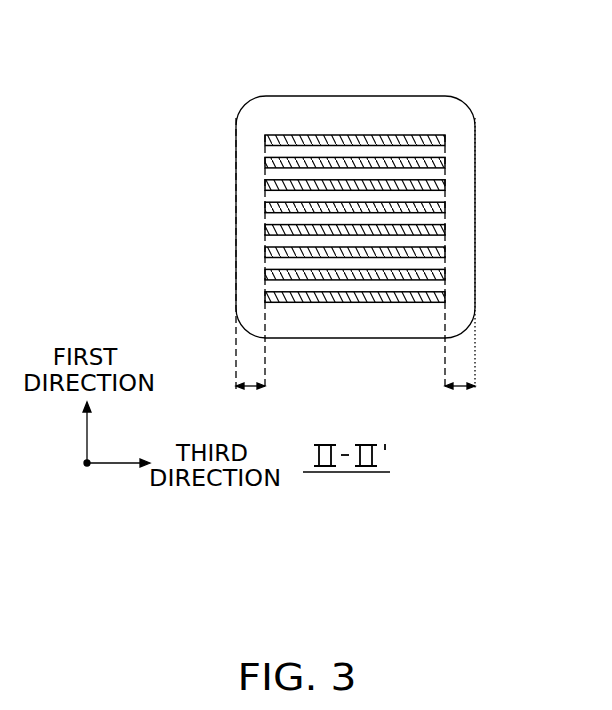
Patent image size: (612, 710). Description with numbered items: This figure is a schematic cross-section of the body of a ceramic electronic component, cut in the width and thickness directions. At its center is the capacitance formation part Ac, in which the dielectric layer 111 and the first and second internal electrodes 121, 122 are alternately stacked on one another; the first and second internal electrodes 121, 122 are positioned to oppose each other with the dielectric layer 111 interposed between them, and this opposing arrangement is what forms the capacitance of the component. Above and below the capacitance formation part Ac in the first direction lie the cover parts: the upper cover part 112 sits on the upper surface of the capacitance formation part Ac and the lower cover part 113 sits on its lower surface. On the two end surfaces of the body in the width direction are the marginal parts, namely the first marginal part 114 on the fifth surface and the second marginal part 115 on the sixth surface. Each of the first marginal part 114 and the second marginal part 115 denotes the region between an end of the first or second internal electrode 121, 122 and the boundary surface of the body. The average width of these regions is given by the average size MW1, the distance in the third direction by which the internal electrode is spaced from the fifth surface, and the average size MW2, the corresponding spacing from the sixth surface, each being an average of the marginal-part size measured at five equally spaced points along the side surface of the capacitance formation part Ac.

The dielectric layer 111 is at (402, 203).
The upper cover part 112 is at (352, 96).
The lower cover part 113 is at (348, 327).
The first marginal part 114 is at (240, 246).
The second marginal part 115 is at (468, 247).
The first internal electrode 121 is at (446, 136).
The second internal electrode 122 is at (446, 160).
The capacitance formation part Ac is at (262, 221).
The average size of area spaced from fifth surface MW1 is at (252, 359).
The average size of area spaced from sixth surface MW2 is at (462, 359).